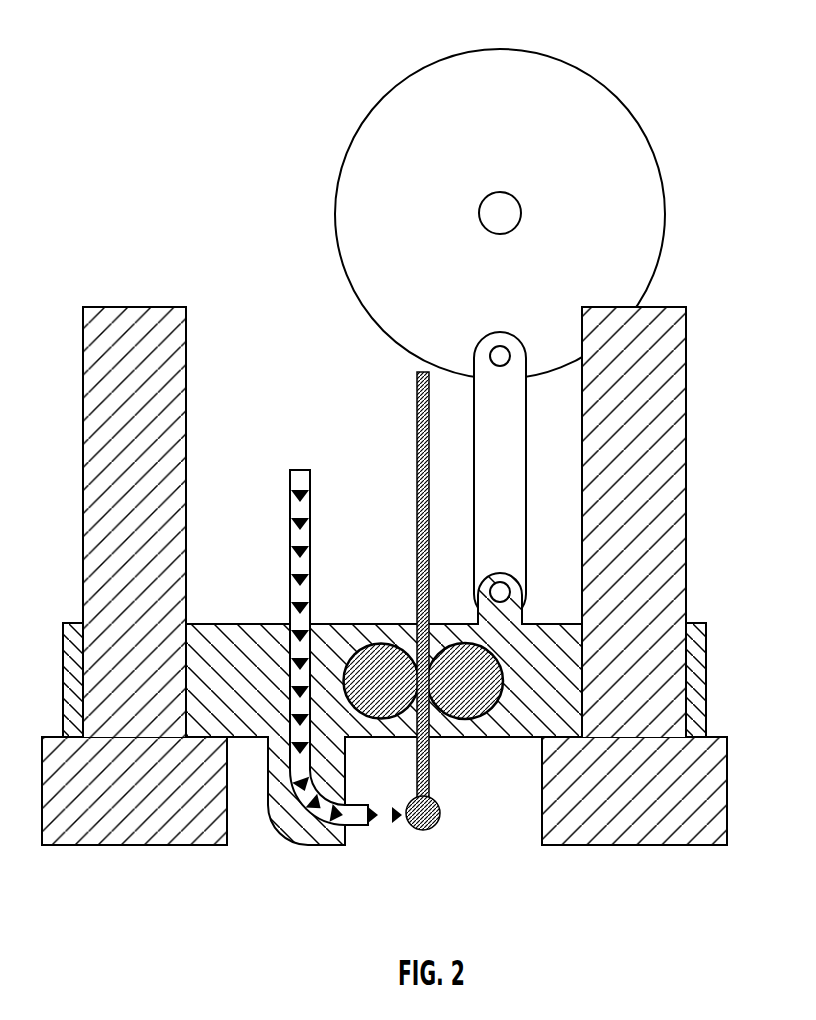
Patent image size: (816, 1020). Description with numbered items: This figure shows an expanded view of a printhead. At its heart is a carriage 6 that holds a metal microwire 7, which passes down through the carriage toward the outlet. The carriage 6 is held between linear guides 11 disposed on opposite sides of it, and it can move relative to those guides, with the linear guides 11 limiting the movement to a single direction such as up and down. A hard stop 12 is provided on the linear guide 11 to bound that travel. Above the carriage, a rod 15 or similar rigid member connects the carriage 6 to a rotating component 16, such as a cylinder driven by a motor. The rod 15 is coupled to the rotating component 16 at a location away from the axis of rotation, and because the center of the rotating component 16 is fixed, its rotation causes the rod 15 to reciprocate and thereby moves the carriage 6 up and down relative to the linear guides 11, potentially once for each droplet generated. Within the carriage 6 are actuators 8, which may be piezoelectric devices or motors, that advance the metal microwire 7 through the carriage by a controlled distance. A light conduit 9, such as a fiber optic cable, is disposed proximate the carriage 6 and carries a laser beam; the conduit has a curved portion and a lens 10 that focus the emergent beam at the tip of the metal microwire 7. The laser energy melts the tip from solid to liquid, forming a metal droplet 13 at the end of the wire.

The carriage 6 is at (567, 673).
The metal microwire 7 is at (417, 462).
The actuators 8 is at (476, 683).
The light conduit 9 is at (300, 505).
The lens 10 is at (368, 813).
The linear guides 11 is at (145, 587).
The hard stop 12 is at (77, 737).
The metal droplet 13 is at (423, 830).
The rod 15 is at (474, 420).
The rotating component 16 is at (580, 66).